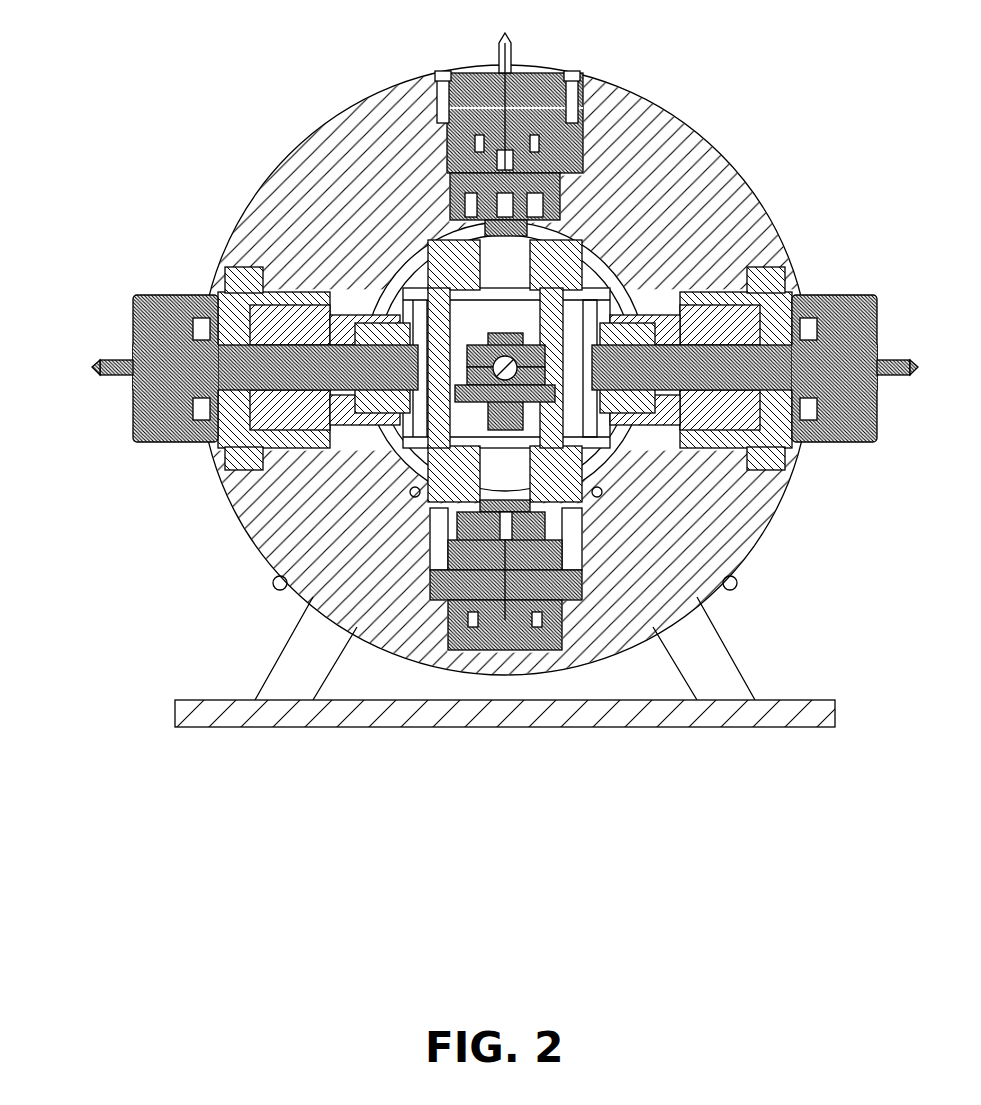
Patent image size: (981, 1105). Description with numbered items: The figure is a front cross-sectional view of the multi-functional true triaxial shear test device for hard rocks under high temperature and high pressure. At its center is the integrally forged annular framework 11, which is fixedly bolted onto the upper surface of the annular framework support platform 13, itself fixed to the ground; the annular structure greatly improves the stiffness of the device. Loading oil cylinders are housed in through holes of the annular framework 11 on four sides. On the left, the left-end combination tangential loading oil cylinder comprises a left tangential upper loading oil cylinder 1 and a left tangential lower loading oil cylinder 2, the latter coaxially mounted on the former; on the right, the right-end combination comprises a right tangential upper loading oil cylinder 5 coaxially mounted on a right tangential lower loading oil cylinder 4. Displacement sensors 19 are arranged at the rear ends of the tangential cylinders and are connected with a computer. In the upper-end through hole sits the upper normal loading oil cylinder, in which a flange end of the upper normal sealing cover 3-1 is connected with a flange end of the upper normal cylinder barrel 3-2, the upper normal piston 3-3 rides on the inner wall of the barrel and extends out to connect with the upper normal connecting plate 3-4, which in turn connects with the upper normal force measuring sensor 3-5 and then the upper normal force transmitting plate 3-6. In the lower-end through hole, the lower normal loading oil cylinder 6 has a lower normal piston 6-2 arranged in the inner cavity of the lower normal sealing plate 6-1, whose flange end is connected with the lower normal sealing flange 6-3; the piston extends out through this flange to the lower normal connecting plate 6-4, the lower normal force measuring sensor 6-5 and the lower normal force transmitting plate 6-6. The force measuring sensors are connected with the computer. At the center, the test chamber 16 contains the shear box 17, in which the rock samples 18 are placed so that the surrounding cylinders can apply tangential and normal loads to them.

The left tangential upper loading oil cylinder 1 is at (143, 293).
The left tangential lower loading oil cylinder 2 is at (217, 292).
The right tangential lower loading oil cylinder 4 is at (853, 293).
The right tangential upper loading oil cylinder 5 is at (793, 293).
The lower normal loading oil cylinder 6 is at (497, 678).
The lower normal sealing plate 6-1 is at (477, 618).
The lower normal piston 6-2 is at (481, 605).
The lower normal sealing flange 6-3 is at (458, 625).
The lower normal connecting plate 6-4 is at (523, 612).
The lower normal force measuring sensor 6-5 is at (553, 622).
The lower normal force transmitting plate 6-6 is at (541, 714).
The annular framework 11 is at (305, 200).
The annular framework support platform 13 is at (213, 713).
The test chamber 16 is at (400, 290).
The shear box 17 is at (520, 337).
The rock samples 18 is at (585, 395).
The displacement sensors 19 is at (127, 362).
The upper normal sealing cover 3-1 is at (532, 67).
The upper normal cylinder barrel 3-2 is at (568, 72).
The upper normal piston 3-3 is at (478, 67).
The upper normal connecting plate 3-4 is at (597, 85).
The upper normal force measuring sensor 3-5 is at (450, 70).
The upper normal force transmitting plate 3-6 is at (600, 128).